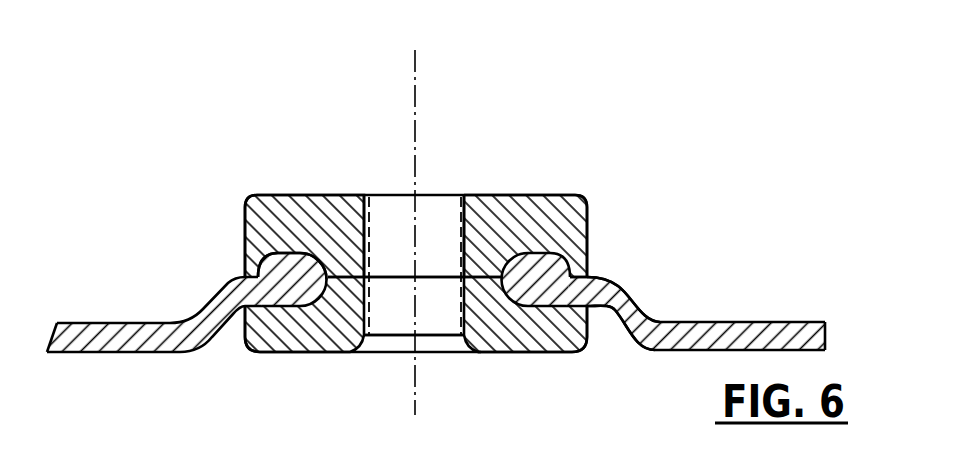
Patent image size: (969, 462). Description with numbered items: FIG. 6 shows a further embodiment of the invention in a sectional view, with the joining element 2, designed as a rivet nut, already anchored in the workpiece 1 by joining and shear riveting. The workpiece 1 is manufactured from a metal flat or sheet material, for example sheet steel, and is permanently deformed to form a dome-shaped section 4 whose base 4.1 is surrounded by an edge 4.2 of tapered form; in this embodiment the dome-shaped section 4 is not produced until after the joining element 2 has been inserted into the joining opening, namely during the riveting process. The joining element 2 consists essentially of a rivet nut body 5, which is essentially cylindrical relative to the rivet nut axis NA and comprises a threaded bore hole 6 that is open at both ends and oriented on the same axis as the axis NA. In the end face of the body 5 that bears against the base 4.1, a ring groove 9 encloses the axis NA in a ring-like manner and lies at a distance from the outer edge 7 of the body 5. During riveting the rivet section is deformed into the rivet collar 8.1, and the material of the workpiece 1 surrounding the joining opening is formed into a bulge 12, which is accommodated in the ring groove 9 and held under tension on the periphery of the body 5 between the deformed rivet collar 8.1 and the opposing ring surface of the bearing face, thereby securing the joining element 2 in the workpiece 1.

The workpiece 1 is at (695, 312).
The joining element 2 is at (592, 205).
The dome-shaped section 4 is at (598, 272).
The base 4.1 is at (590, 287).
The edge 4.2 is at (210, 305).
The rivet nut body 5 is at (512, 210).
The bore hole 6 is at (456, 222).
The outer edge 7 is at (243, 225).
The deformed rivet collar 8.1 is at (305, 338).
The ring groove 9 is at (308, 255).
The bulge 12 is at (291, 272).
The rivet nut axis NA is at (441, 231).